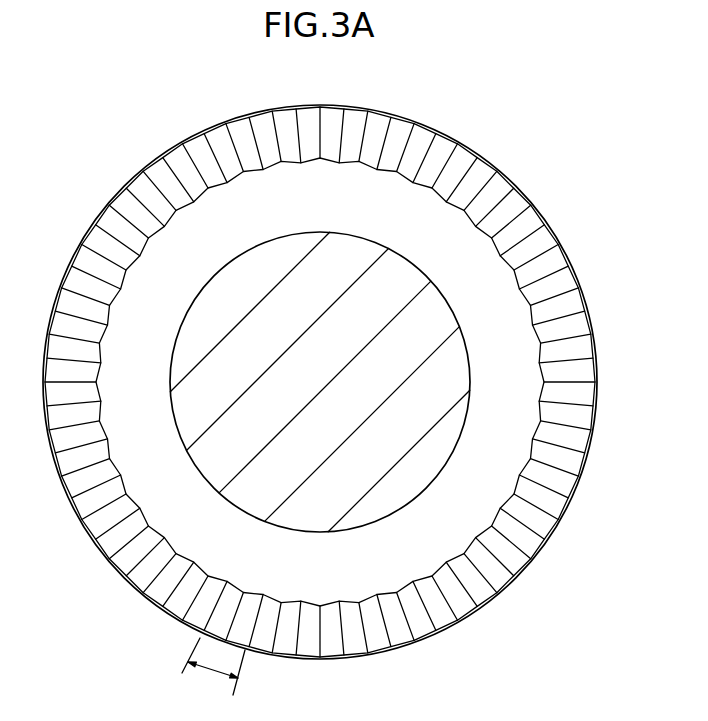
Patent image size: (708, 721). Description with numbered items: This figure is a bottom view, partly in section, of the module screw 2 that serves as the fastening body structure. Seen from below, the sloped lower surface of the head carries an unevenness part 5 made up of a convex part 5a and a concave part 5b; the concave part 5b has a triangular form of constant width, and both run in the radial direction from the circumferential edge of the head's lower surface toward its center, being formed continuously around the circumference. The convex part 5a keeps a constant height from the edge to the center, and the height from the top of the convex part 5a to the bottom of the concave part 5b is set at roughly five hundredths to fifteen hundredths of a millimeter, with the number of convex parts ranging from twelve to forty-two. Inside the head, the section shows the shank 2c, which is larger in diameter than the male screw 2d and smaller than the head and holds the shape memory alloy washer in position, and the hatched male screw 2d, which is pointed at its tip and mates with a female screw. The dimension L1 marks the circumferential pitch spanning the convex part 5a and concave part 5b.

The module screw 2 is at (360, 362).
The shank 2c is at (498, 306).
The male screw 2d is at (452, 370).
The unevenness part 5 is at (346, 361).
The convex part 5a is at (432, 141).
The concave part 5b is at (460, 143).
The pitch length L1 is at (213, 671).